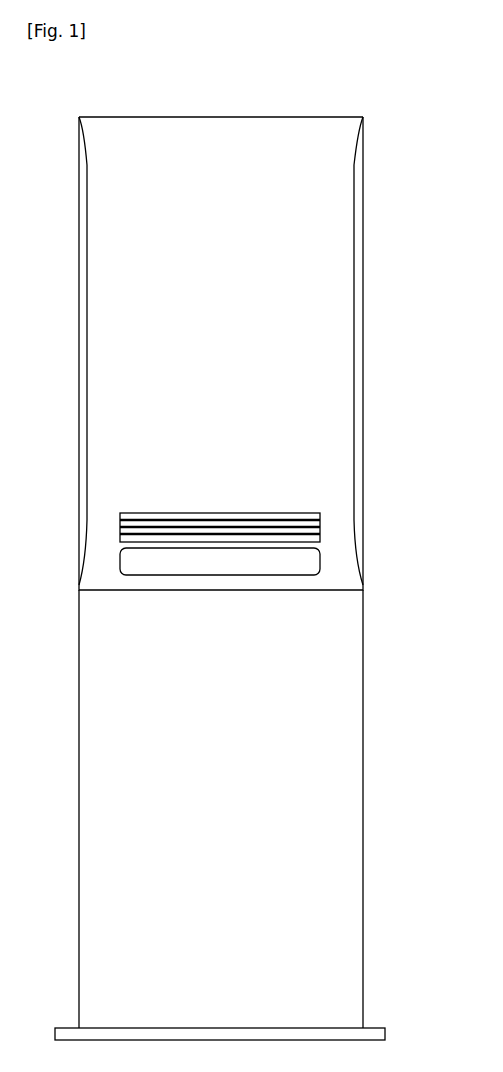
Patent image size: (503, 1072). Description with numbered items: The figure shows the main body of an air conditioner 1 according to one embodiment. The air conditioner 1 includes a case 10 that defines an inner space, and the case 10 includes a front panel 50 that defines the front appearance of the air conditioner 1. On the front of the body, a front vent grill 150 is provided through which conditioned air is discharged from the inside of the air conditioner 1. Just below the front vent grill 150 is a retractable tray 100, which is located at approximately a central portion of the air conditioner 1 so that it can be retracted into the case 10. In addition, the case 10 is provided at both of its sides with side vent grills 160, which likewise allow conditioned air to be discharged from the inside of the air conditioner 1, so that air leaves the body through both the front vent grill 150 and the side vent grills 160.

The air conditioner 1 is at (398, 185).
The case 10 is at (286, 117).
The front panel 50 is at (315, 388).
The retractable tray 100 is at (318, 560).
The front vent grill 150 is at (300, 515).
The side vent grills 160 is at (360, 305).